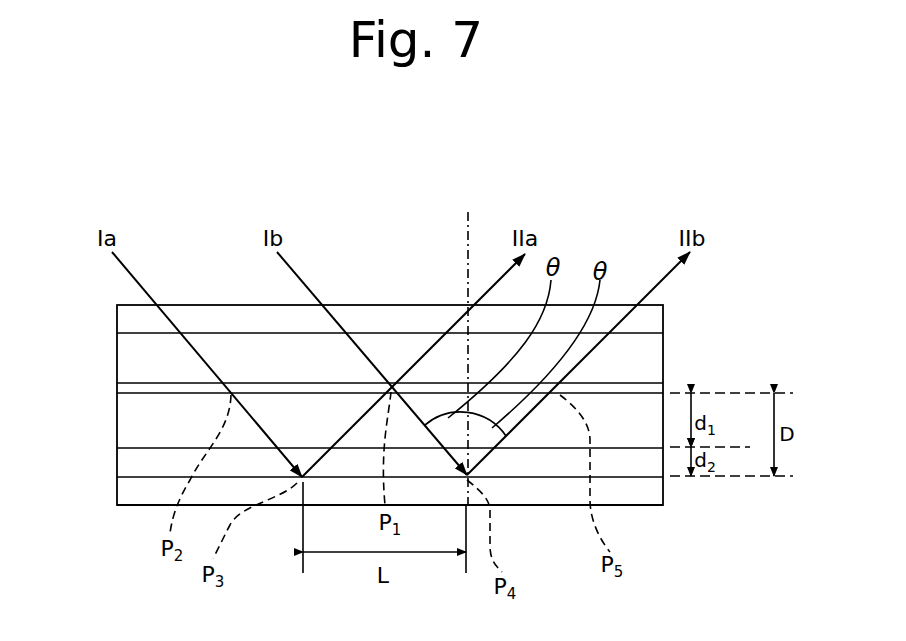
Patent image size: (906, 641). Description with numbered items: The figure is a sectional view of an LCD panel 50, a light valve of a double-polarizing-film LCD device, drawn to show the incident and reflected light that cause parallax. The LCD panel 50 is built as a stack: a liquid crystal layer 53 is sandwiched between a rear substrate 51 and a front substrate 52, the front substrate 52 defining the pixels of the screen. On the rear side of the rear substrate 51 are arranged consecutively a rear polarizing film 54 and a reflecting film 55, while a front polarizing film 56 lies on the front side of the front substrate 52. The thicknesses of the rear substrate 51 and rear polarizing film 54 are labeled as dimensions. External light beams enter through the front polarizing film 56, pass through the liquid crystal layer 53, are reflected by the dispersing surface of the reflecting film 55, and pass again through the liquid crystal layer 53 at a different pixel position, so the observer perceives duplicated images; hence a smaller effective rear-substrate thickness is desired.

The LCD panel 50 is at (613, 152).
The rear substrate 51 is at (126, 421).
The front substrate 52 is at (126, 361).
The liquid crystal layer 53 is at (126, 389).
The rear polarizing film 54 is at (126, 459).
The reflecting film 55 is at (126, 491).
The front polarizing film 56 is at (126, 317).